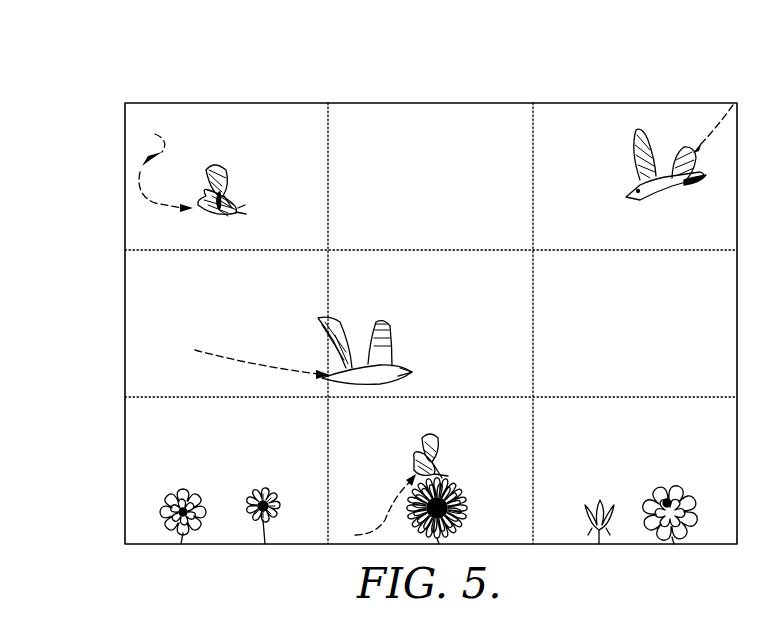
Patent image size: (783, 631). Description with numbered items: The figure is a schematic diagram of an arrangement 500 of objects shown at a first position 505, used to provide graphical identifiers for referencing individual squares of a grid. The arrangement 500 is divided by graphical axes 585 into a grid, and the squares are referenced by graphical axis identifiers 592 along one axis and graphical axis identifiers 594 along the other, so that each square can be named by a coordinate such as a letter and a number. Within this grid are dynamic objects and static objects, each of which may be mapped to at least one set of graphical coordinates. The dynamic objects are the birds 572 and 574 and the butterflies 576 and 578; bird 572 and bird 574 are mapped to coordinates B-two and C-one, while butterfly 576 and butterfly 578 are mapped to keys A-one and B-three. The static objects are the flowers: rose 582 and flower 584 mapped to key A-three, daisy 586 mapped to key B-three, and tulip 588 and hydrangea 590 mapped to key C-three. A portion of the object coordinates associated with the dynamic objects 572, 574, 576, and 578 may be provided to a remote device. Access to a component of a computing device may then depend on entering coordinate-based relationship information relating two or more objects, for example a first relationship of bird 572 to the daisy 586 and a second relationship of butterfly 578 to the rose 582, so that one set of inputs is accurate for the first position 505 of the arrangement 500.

The arrangement 500 is at (88, 93).
The first position 505 is at (581, 103).
The bird 572 is at (382, 336).
The bird 574 is at (670, 186).
The butterfly 576 is at (238, 190).
The butterfly 578 is at (436, 438).
The rose 582 is at (184, 494).
The flower 584 is at (263, 490).
The graphical axes 585 is at (332, 199).
The daisy 586 is at (466, 492).
The tulip 588 is at (597, 500).
The hydrangea 590 is at (669, 486).
The graphical axis identifiers 592 is at (530, 103).
The graphical axis identifiers 594 is at (134, 397).